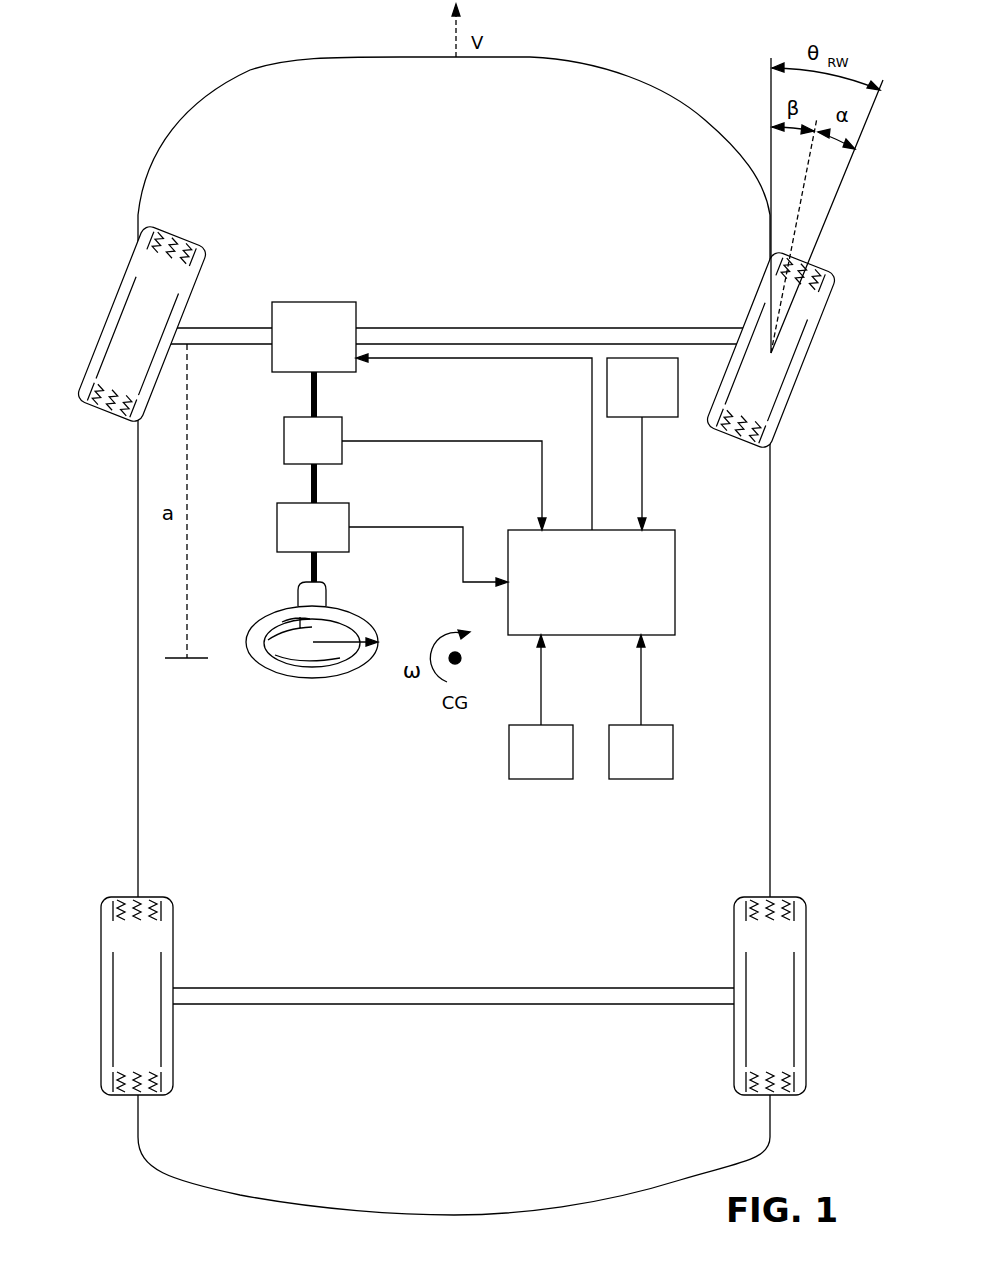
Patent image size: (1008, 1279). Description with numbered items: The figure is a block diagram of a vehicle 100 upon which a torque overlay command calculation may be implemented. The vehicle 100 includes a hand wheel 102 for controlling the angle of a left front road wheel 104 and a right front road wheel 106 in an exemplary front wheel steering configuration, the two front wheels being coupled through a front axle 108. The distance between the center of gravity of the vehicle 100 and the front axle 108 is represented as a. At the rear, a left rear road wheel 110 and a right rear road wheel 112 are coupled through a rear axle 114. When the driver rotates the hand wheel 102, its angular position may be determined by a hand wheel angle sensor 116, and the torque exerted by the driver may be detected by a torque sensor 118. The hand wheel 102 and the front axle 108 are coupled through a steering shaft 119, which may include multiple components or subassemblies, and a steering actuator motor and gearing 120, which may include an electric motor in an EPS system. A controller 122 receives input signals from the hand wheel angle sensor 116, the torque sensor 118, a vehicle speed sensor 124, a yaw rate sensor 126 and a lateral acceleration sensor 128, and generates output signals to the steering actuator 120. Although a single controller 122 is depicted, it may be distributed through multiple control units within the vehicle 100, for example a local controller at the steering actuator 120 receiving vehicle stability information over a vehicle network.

The vehicle 100 is at (153, 736).
The hand wheel 102 is at (274, 664).
The left front road wheel 104 is at (113, 300).
The right front road wheel 106 is at (798, 360).
The front axle 108 is at (473, 328).
The left rear road wheel 110 is at (100, 1053).
The right rear road wheel 112 is at (805, 1053).
The rear axle 114 is at (408, 1005).
The hand wheel angle sensor 116 is at (300, 506).
The torque sensor 118 is at (300, 420).
The steering shaft 119 is at (318, 385).
The steering actuator motor and gearing 120 is at (320, 313).
The controller 122 is at (666, 559).
The vehicle speed sensor 124 is at (633, 358).
The yaw rate sensor 126 is at (541, 780).
The lateral acceleration sensor 128 is at (641, 780).